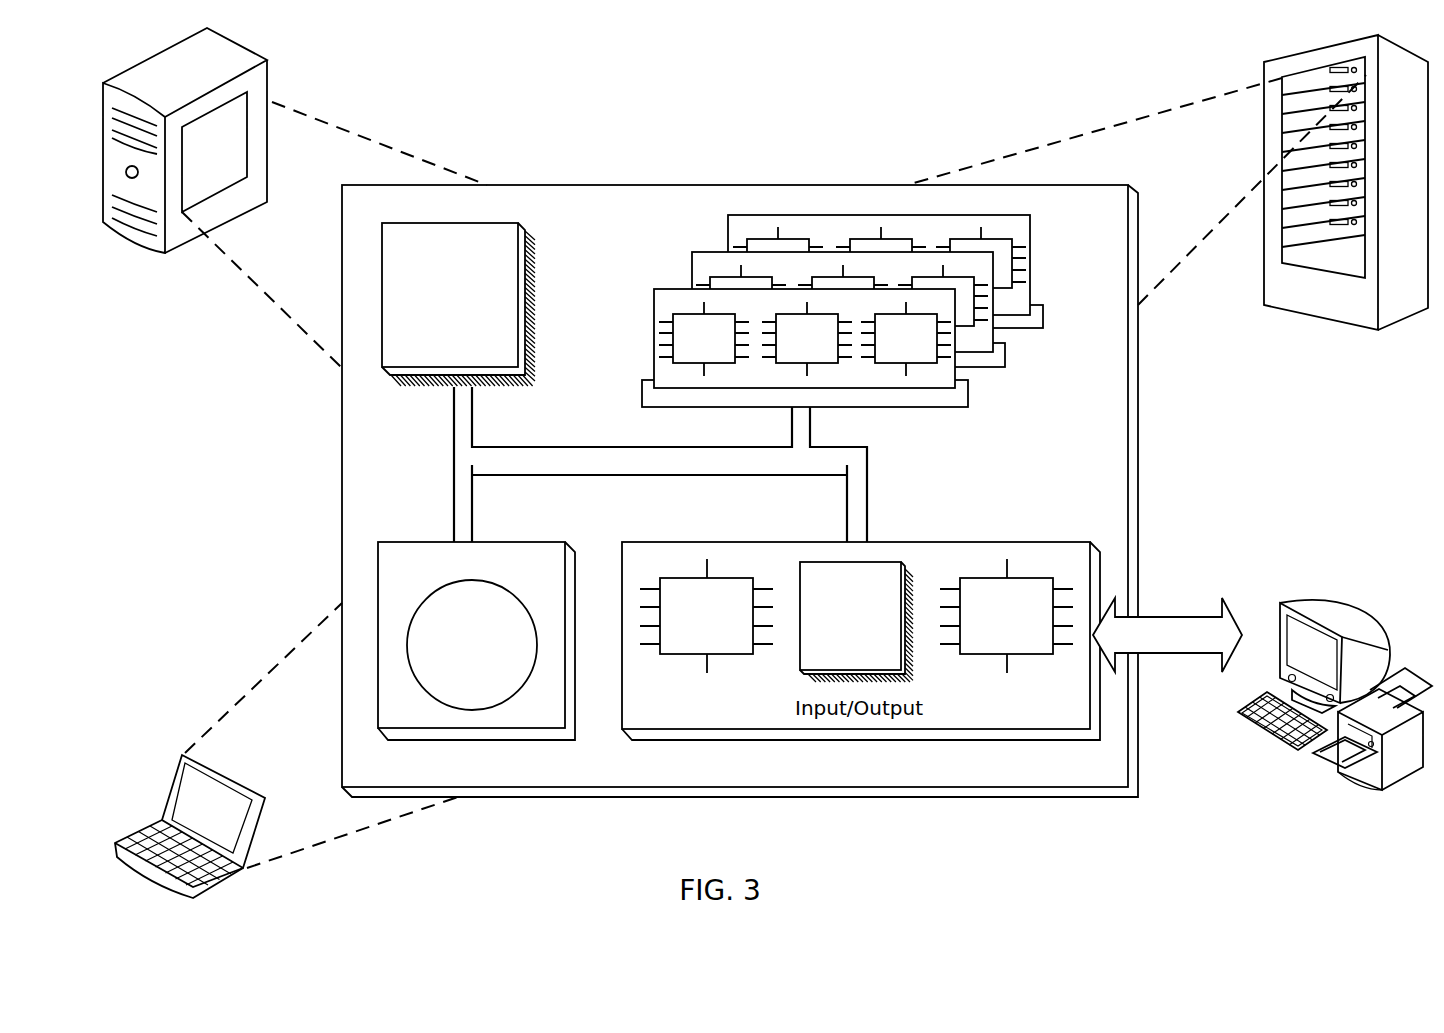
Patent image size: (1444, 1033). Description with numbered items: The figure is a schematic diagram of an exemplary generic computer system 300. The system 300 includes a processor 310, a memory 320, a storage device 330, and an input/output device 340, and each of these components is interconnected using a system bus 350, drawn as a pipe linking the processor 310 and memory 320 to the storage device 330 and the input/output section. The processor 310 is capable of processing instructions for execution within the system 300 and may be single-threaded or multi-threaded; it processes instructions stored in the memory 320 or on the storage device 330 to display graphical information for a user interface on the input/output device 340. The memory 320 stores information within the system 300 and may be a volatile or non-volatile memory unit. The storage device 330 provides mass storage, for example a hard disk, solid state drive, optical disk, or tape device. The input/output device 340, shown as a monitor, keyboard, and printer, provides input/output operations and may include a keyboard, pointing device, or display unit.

The generic computer system 300 is at (736, 44).
The processor 310 is at (506, 358).
The memory 320 is at (1036, 364).
The storage device 330 is at (554, 718).
The input/output device 340 is at (1282, 603).
The system bus 350 is at (655, 467).